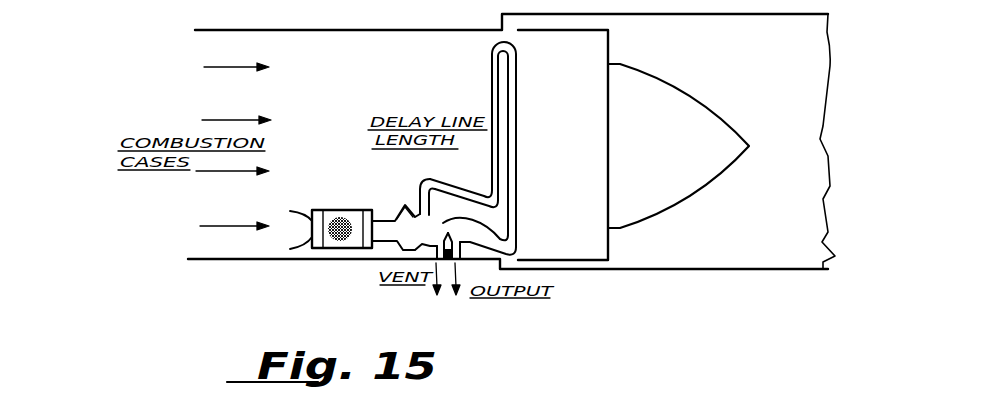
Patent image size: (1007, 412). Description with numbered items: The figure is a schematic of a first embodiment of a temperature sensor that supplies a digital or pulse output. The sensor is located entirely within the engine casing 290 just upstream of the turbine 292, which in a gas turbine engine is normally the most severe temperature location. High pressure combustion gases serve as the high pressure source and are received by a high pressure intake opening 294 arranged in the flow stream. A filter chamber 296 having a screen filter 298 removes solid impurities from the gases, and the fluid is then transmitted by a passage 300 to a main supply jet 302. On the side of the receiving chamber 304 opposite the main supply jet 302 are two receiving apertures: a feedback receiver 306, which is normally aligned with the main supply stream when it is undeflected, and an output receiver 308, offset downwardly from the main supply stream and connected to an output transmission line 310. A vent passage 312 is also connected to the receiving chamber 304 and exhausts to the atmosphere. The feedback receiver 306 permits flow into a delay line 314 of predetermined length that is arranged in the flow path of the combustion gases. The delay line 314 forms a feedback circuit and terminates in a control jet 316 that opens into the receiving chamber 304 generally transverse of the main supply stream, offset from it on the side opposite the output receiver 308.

The engine casing 290 is at (233, 261).
The turbine 292 is at (605, 153).
The high pressure intake opening 294 is at (301, 245).
The filter chamber 296 is at (330, 210).
The screen filter 298 is at (350, 246).
The passage 300 is at (386, 221).
The main supply jet 302 is at (406, 205).
The receiving chamber 304 is at (412, 250).
The feedback receiver 306 is at (445, 221).
The output receiver 308 is at (462, 244).
The output transmission line 310 is at (461, 265).
The vent passage 312 is at (430, 278).
The delay line 314 is at (491, 67).
The control jet 316 is at (431, 187).